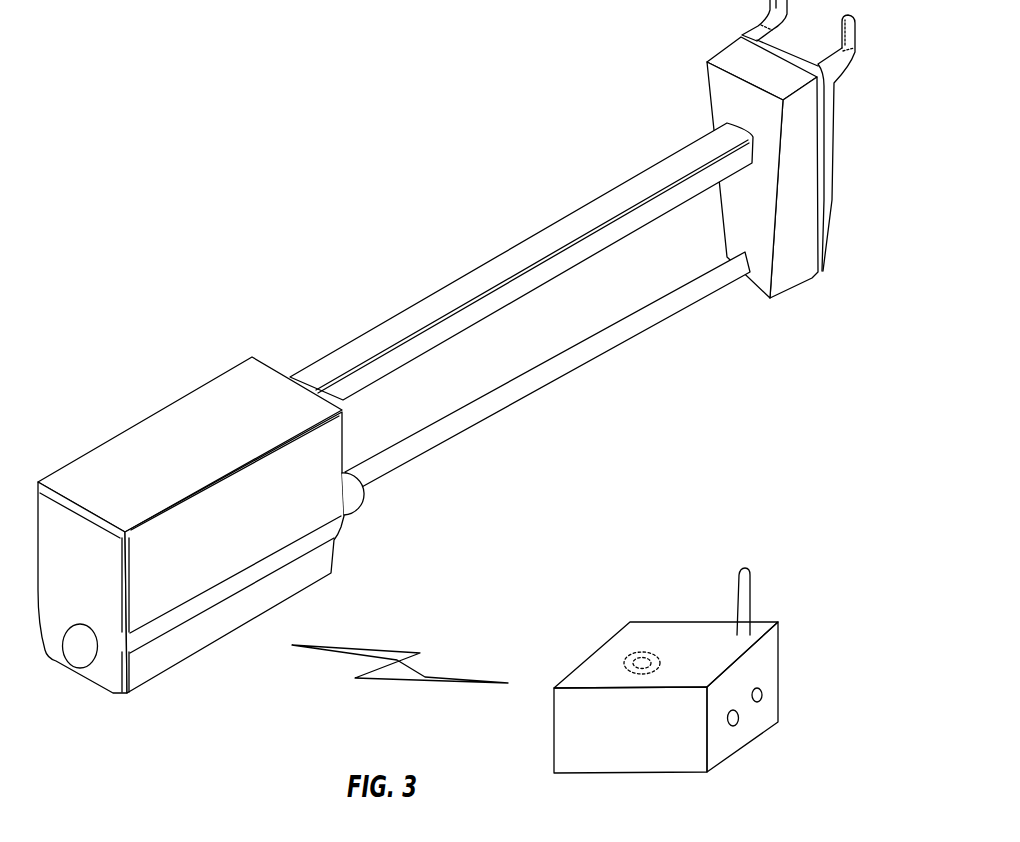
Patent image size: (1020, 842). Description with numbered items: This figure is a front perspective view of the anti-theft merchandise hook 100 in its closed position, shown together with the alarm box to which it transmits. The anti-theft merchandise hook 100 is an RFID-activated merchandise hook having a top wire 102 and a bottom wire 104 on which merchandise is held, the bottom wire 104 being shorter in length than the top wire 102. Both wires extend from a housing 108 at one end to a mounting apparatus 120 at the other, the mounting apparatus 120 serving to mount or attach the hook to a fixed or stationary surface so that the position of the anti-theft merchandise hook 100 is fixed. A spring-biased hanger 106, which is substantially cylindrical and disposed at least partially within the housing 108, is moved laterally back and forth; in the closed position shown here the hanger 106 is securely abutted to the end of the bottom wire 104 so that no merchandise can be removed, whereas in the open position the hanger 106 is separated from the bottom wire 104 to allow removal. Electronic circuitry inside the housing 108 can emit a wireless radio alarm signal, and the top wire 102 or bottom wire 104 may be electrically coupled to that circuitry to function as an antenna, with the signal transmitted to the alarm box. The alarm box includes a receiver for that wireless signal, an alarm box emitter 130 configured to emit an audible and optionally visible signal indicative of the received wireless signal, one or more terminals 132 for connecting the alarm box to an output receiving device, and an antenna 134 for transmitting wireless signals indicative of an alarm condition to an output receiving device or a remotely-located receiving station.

The anti-theft merchandise hook 100 is at (475, 346).
The top wire 102 is at (501, 255).
The bottom wire 104 is at (545, 386).
The spring-biased hanger 106 is at (353, 513).
The housing 108 is at (237, 520).
The mounting apparatus 120 is at (833, 202).
The alarm box emitter 130 is at (692, 666).
The terminals 132 is at (762, 695).
The antenna 134 is at (751, 593).